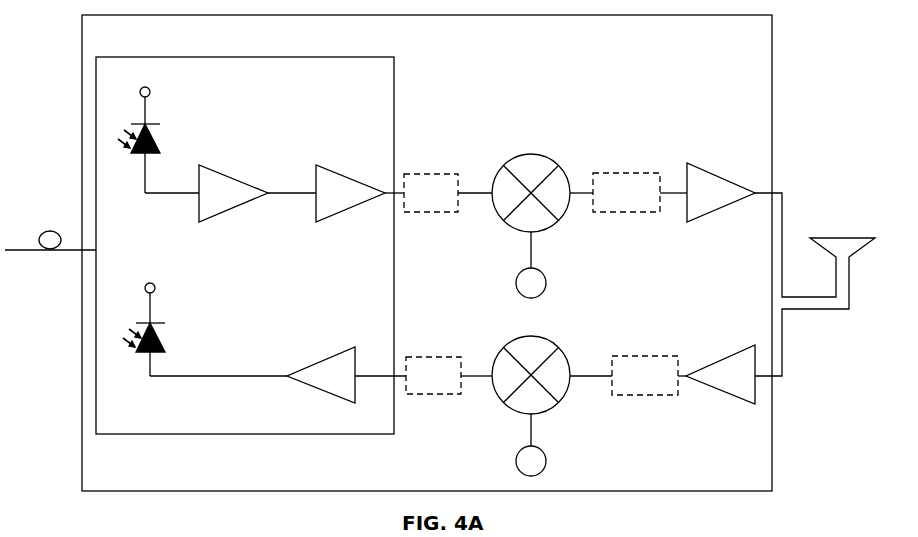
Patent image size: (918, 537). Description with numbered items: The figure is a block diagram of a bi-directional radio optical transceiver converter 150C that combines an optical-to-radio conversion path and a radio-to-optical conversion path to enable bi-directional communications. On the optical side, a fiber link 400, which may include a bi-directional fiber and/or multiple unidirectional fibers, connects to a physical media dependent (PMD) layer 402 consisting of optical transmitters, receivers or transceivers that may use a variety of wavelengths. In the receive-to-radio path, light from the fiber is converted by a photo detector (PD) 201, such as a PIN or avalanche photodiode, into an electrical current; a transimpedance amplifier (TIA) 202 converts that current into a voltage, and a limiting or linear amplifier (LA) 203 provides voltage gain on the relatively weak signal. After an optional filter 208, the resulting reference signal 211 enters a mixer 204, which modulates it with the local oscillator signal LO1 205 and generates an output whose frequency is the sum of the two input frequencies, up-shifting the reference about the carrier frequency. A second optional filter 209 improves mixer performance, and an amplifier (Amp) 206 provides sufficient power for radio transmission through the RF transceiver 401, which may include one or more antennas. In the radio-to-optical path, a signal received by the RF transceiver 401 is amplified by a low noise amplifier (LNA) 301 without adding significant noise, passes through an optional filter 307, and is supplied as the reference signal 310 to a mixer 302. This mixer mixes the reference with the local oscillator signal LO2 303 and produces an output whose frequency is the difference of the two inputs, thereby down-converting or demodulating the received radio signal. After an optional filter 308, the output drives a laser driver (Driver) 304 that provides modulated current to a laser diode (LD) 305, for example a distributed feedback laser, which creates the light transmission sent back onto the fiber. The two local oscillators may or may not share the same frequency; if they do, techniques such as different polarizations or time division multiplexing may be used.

The bi-directional converter 150C is at (427, 253).
The physical media dependent (PMD) layer 402 is at (245, 235).
The fiber link 400 is at (50, 262).
The photo detector (PD) 201 is at (156, 140).
The transimpedance amplifier (TIA) 202 is at (257, 206).
The limiting or linear amplifier (LA) 203 is at (360, 182).
The filter 208 is at (431, 207).
The reference signal 211 is at (475, 204).
The mixer 204 is at (542, 181).
The local oscillator (LO1) signal 205 is at (528, 265).
The filter 209 is at (626, 206).
The amplifier (Amp) 206 is at (707, 189).
The RF transceiver 401 is at (815, 284).
The low noise amplifier (LNA) 301 is at (716, 371).
The filter 307 is at (645, 389).
The reference signal 310 is at (591, 388).
The mixer 302 is at (515, 380).
The local oscillator (LO2) signal 303 is at (526, 445).
The filter 308 is at (433, 389).
The laser driver (Driver) 304 is at (344, 373).
The laser diode (LD) 305 is at (201, 330).